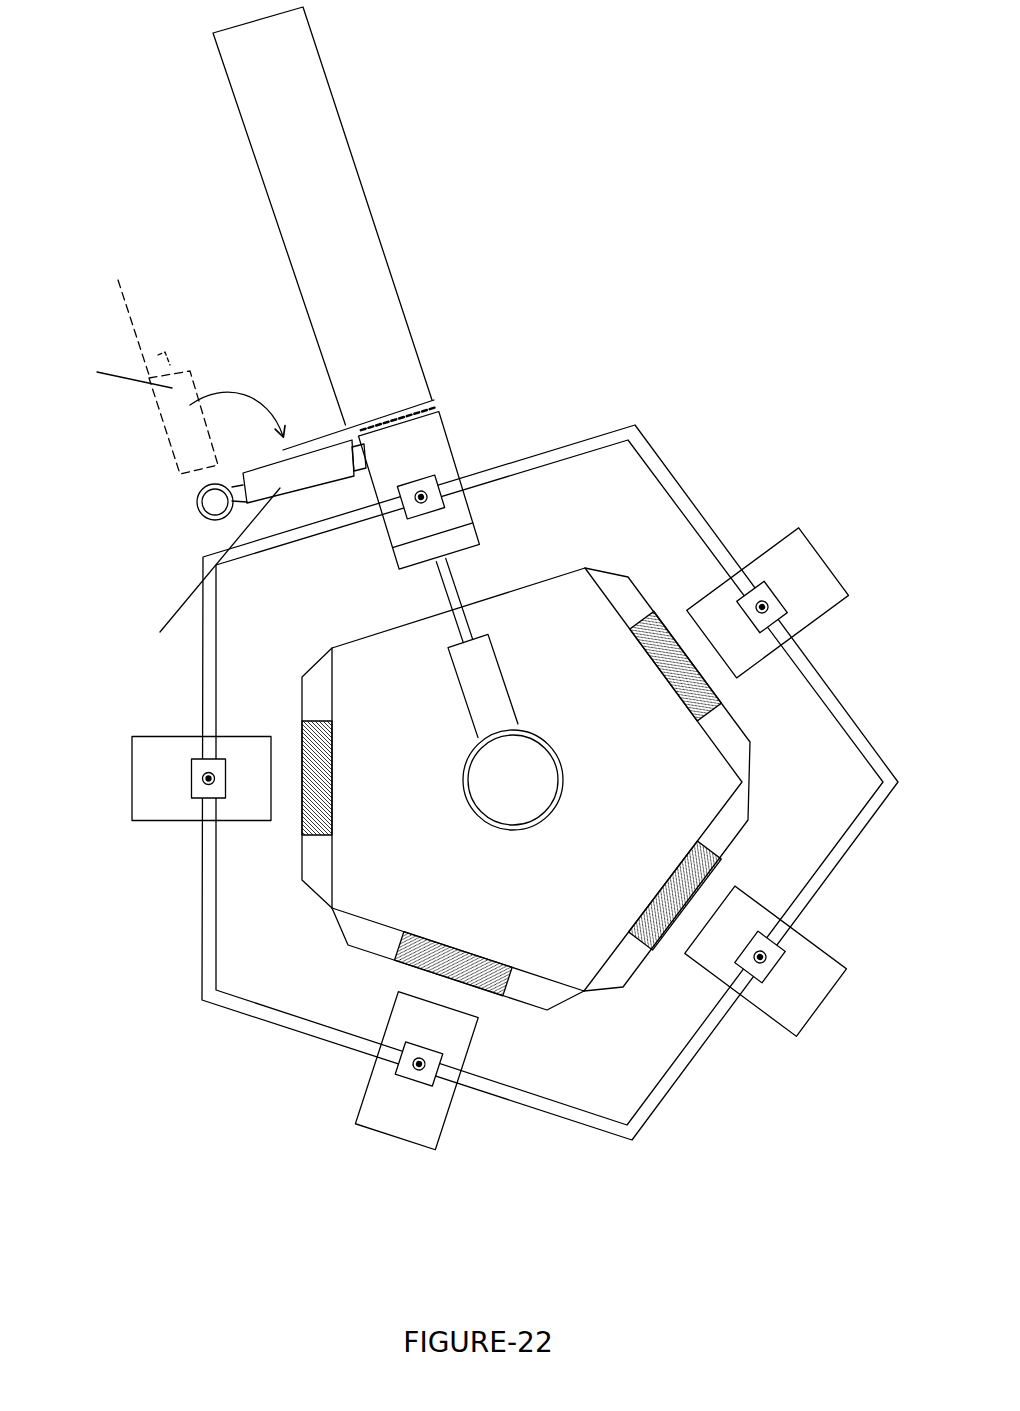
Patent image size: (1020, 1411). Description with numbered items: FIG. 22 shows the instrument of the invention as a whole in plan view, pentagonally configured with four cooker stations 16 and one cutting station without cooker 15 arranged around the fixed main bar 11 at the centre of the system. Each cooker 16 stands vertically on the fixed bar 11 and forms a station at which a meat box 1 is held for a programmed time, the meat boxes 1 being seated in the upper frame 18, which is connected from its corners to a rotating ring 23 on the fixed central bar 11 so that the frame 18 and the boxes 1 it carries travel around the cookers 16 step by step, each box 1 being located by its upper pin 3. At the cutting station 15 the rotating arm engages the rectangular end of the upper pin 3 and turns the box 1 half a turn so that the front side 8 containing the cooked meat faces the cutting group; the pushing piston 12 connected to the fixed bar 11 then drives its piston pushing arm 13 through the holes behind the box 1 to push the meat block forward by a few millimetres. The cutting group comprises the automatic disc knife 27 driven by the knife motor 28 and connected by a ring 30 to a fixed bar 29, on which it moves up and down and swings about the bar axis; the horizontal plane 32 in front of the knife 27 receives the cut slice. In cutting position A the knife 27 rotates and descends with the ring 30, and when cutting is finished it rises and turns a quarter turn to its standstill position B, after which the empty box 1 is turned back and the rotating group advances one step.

The meat box 1 is at (432, 438).
The upper pin 3 is at (424, 492).
The front side 8 is at (432, 405).
The fixed main bar 11 is at (507, 785).
The pushing piston 12 is at (488, 690).
The piston pushing arm 13 is at (440, 589).
The cutting station without cooker 15 is at (528, 585).
The cooker station 16 is at (318, 738).
The upper frame 18 is at (202, 1000).
The rotating ring 23 is at (557, 755).
The automatic knife 27 is at (340, 440).
The knife motor 28 is at (193, 422).
The fixed bar 29 is at (200, 515).
The ring 30 is at (197, 503).
The horizontal plane 32 is at (337, 207).
The cutting position A is at (202, 576).
The standstill position B is at (116, 372).